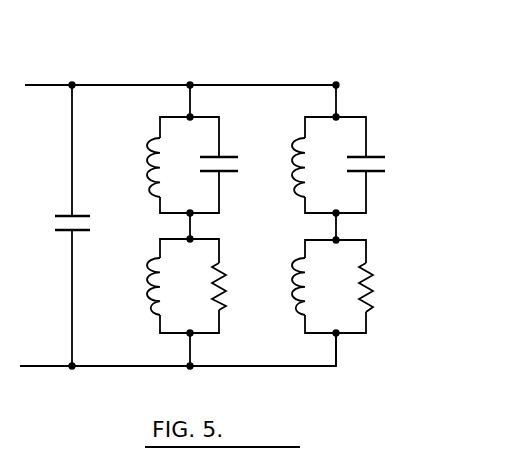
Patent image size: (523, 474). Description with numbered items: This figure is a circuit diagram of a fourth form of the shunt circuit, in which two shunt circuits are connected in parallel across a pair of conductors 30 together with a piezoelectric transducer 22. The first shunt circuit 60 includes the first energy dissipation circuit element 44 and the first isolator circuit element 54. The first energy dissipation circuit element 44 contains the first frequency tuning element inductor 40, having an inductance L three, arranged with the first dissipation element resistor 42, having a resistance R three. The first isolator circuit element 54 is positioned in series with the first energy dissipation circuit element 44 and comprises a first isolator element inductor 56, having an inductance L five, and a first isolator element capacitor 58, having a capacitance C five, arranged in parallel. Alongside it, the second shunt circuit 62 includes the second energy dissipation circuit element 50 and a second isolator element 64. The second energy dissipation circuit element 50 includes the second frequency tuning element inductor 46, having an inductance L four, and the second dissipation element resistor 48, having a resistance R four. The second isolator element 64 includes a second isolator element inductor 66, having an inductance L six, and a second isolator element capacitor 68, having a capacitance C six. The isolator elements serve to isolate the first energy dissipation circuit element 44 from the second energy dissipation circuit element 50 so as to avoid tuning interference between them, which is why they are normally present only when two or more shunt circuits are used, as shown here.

The piezoelectric transducer (PZT) 22 is at (62, 215).
The conductors / bus lines 30 is at (100, 83).
The first frequency tuning element inductor 40 is at (153, 316).
The first dissipation element resistor 42 is at (220, 303).
The first energy dissipation circuit element 44 is at (172, 301).
The second frequency tuning element inductor 46 is at (298, 318).
The second dissipation element resistor 48 is at (386, 301).
The second energy dissipation circuit element 50 is at (352, 300).
The first isolator circuit element 54 is at (172, 177).
The first isolator element inductor 56 is at (153, 197).
The first isolator element capacitor 58 is at (226, 172).
The first shunt circuit 60 is at (202, 80).
The second shunt circuit 62 is at (343, 79).
The second isolator element 64 is at (352, 176).
The second isolator element inductor 66 is at (298, 200).
The second isolator element capacitor 68 is at (383, 179).